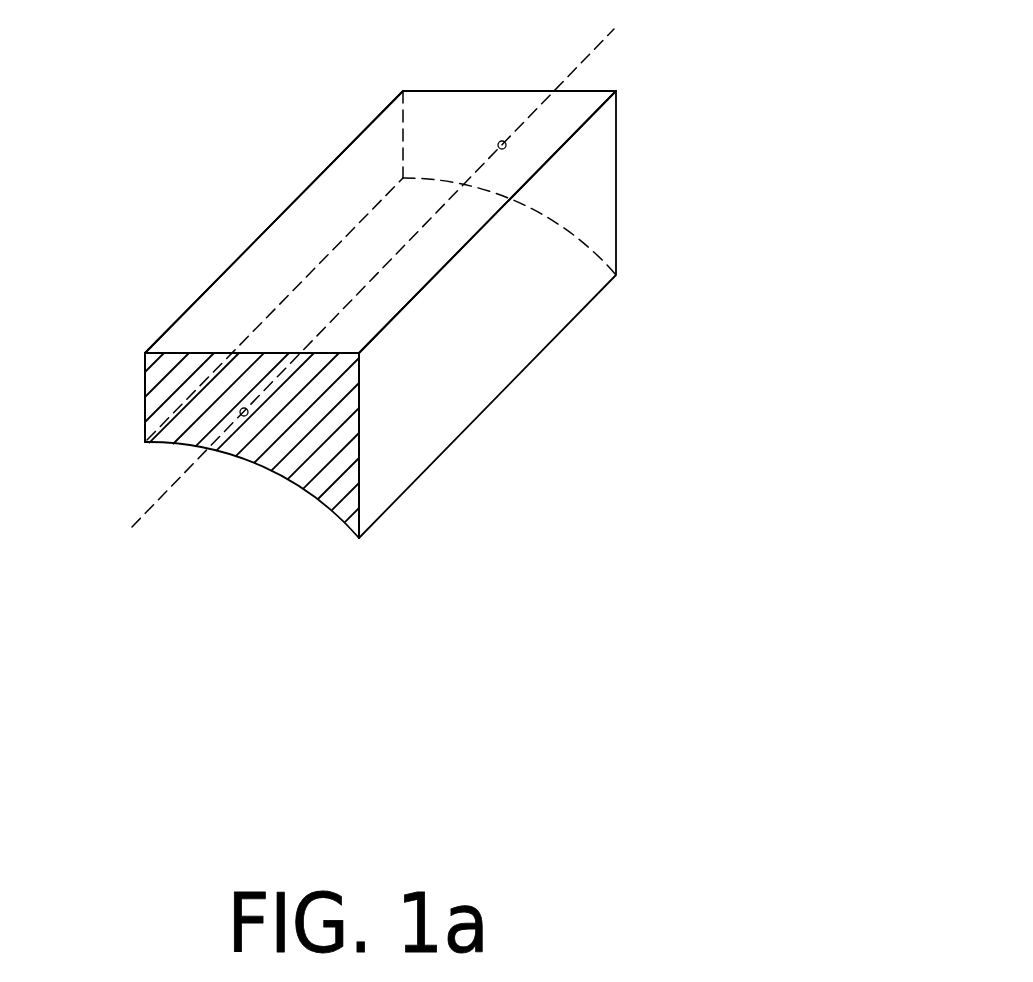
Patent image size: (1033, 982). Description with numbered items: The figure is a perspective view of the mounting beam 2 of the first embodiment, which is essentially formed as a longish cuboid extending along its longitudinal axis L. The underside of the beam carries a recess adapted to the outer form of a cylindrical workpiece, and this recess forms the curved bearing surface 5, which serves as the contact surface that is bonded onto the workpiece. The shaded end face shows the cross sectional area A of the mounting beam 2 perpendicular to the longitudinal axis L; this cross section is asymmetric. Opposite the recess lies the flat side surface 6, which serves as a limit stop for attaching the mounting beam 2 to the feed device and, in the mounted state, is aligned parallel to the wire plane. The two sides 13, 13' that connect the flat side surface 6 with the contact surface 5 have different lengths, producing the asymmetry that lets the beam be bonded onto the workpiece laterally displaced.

The mounting beam 2 is at (175, 253).
The bearing surface 5 is at (213, 447).
The flat side surface 6 is at (377, 243).
The side 13 is at (82, 397).
The side 13' is at (446, 445).
The cross sectional area A is at (206, 408).
The longitudinal axis L is at (583, 63).